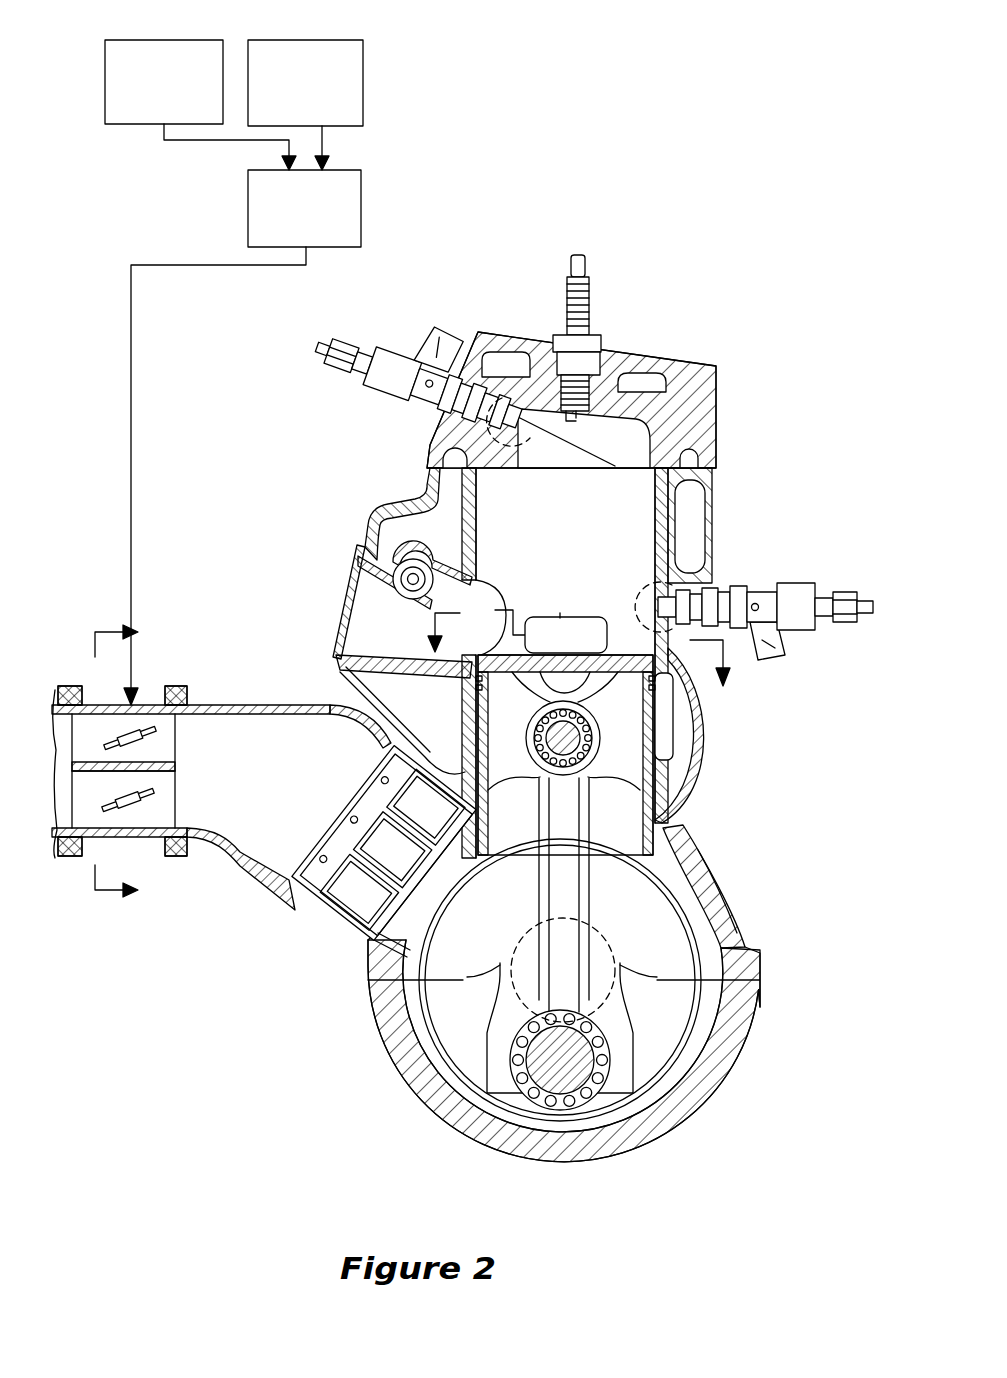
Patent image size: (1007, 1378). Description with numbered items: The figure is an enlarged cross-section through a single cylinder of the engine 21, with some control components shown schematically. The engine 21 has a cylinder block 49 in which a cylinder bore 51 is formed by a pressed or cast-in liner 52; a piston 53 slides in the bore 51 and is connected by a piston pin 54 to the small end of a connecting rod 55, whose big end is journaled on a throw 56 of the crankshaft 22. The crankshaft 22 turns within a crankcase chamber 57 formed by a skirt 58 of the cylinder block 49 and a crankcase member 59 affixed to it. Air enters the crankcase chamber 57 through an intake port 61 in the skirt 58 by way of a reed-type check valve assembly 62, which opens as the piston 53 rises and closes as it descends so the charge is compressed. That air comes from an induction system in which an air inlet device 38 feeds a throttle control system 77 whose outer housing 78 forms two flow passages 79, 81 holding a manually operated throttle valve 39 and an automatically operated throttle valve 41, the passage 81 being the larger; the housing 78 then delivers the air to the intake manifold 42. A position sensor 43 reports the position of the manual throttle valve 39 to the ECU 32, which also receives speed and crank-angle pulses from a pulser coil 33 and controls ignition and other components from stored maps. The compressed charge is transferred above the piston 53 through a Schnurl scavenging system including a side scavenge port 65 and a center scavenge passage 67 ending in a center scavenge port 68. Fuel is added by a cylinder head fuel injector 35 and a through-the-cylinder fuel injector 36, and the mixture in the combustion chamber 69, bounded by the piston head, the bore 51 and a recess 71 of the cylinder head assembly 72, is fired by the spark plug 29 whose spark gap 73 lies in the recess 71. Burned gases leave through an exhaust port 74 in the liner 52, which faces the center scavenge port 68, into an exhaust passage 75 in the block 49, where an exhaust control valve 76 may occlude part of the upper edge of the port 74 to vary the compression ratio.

The engine 21 is at (448, 703).
The crankshaft 22 is at (603, 938).
The spark plug 29 is at (597, 302).
The ECU 32 is at (361, 224).
The pulser coil 33 is at (168, 40).
The cylinder head fuel injector 35 is at (397, 355).
The through the cylinder fuel injector 36 is at (797, 592).
The air inlet device 38 is at (57, 860).
The manually operated throttle valve 39 is at (108, 740).
The automatically operated throttle valve 41 is at (150, 800).
The intake manifold 42 is at (273, 707).
The position sensor 43 is at (363, 78).
The cylinder block 49 is at (639, 661).
The cylinder bore 51 is at (653, 502).
The cylinder liner 52 is at (712, 490).
The piston 53 is at (565, 702).
The piston pin 54 is at (583, 762).
The connecting rod 55 is at (533, 880).
The throw 56 is at (533, 983).
The crankcase chamber 57 is at (554, 1004).
The skirt 58 is at (742, 910).
The crankcase member 59 is at (730, 1070).
The intake port 61 is at (393, 963).
The reed-type check valve assembly 62 is at (345, 840).
The side scavenge port 65 is at (558, 620).
The center scavenge passage 67 is at (714, 735).
The center scavenge port 68 is at (697, 683).
The combustion chamber 69 is at (623, 430).
The recess 71 is at (690, 443).
The cylinder head assembly 72 is at (610, 409).
The spark gap 73 is at (570, 430).
The exhaust port 74 is at (500, 590).
The exhaust passage 75 is at (407, 573).
The exhaust control valve 76 is at (408, 595).
The throttle control system 77 is at (177, 761).
The outer housing 78 is at (140, 703).
The flow passage 79 is at (163, 743).
The flow passage 81 is at (167, 810).